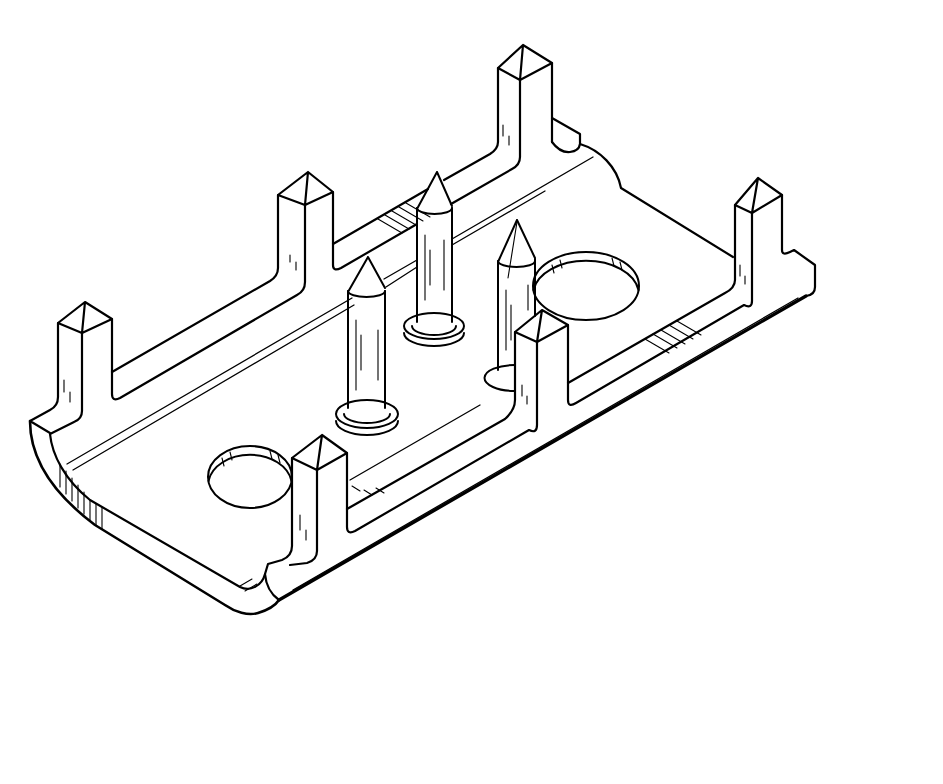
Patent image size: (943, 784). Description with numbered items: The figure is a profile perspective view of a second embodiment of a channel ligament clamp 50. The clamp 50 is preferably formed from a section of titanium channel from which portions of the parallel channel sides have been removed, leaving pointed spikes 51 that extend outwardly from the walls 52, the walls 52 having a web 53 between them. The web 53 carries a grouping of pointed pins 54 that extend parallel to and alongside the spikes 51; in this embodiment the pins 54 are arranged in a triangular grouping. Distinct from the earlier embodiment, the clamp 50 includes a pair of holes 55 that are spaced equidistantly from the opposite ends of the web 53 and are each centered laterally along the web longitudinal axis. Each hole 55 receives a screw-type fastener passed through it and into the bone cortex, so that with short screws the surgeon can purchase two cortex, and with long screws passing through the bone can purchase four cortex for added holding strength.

The channel ligament clamp 50 is at (640, 138).
The pointed spikes 51 is at (547, 388).
The walls 52 is at (147, 360).
The web 53 is at (284, 417).
The pointed pins 54 is at (362, 307).
The holes 55 is at (609, 265).